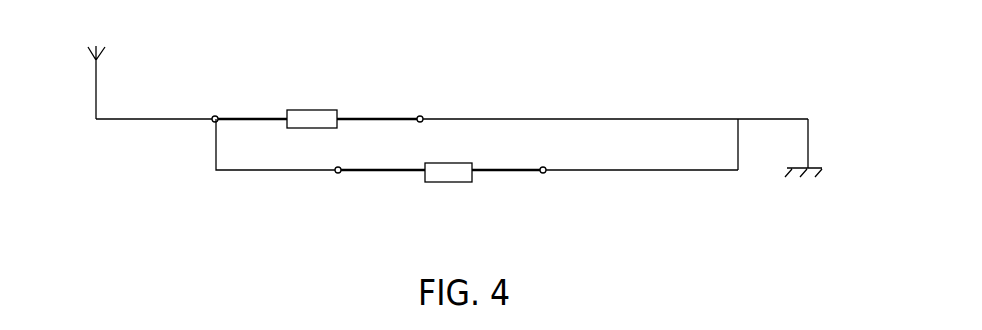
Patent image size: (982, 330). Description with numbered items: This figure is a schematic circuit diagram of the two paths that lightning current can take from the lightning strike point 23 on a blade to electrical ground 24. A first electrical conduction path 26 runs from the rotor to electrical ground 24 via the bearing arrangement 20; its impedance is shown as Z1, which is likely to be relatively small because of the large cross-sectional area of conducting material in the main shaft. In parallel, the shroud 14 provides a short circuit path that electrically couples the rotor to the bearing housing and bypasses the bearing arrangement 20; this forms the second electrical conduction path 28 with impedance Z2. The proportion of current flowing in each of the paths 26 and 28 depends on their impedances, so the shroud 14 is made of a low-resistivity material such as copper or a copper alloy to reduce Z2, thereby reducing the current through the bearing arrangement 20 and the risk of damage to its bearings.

The lightning strike point 23 is at (98, 82).
The shroud 14 is at (272, 118).
The impedance of the second electrical conduction path Z2 is at (307, 112).
The second electrical conduction path 28 is at (548, 110).
The electrical ground 24 is at (810, 144).
The first electrical conduction path 26 is at (315, 178).
The bearing arrangement 20 is at (392, 172).
The impedance of the first electrical conduction path Z1 is at (448, 182).